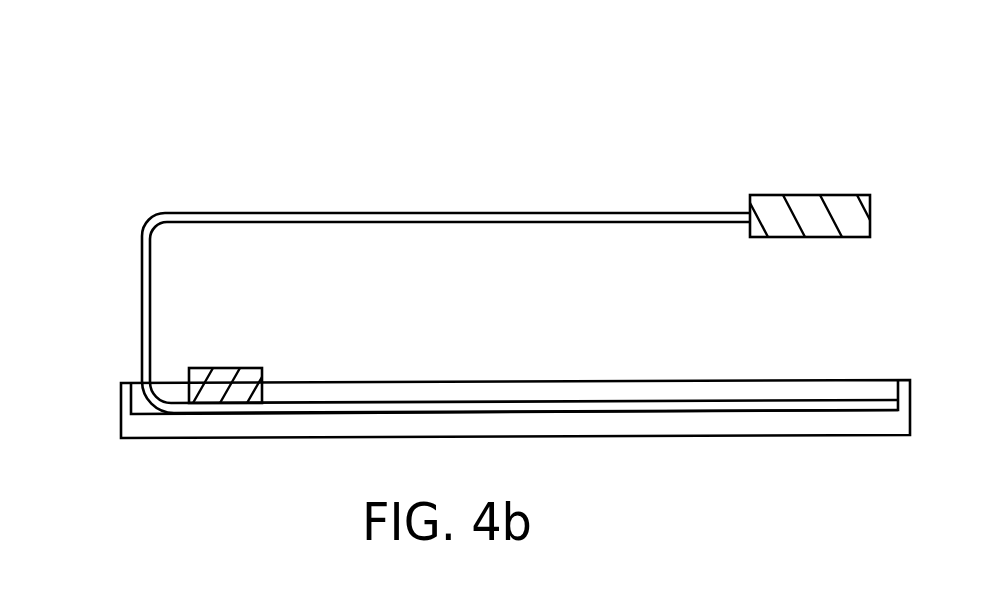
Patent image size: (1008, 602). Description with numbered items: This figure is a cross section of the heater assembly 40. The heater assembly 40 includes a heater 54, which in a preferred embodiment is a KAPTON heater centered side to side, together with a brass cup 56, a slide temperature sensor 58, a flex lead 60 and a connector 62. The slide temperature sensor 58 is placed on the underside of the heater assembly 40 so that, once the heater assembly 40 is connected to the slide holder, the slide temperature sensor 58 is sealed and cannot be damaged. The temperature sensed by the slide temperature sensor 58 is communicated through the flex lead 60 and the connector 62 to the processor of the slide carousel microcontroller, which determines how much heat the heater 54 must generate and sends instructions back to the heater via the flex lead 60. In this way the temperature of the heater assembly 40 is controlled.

The heater assembly 40 is at (597, 138).
The heater 54 is at (500, 400).
The brass cup 56 is at (120, 403).
The slide temperature sensor 58 is at (248, 368).
The flex lead 60 is at (327, 210).
The connector 62 is at (810, 195).